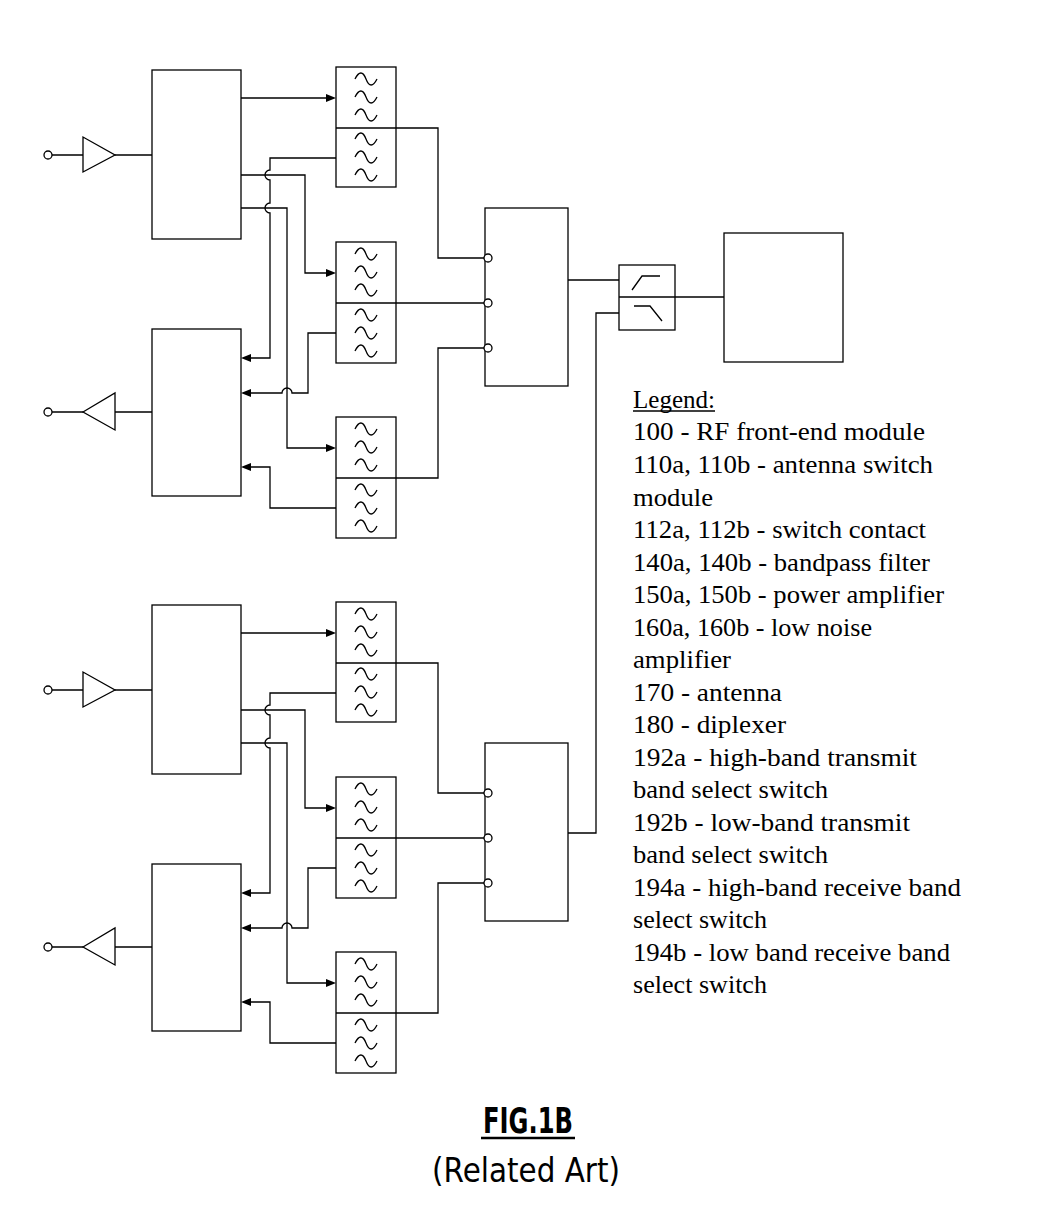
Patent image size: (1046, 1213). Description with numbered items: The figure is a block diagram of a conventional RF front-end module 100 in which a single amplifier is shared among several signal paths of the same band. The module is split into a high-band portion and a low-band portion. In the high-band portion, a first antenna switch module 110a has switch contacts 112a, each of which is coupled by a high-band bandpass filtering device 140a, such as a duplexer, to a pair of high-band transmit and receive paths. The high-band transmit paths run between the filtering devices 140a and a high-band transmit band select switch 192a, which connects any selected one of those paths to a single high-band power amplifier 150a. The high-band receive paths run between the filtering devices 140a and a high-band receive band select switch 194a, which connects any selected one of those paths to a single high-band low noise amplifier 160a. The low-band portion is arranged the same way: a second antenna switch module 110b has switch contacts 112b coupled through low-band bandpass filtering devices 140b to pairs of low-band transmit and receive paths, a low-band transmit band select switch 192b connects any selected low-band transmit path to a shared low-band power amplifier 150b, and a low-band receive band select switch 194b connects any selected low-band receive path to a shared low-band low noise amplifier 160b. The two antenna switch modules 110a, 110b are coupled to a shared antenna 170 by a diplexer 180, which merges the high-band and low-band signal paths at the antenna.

The RF front-end module 100 is at (648, 114).
The first antenna switch module 110a is at (555, 215).
The second antenna switch module 110b is at (548, 852).
The switch contact 112a is at (490, 254).
The switch contact 112b is at (520, 796).
The high-band bandpass filtering device 140a is at (398, 98).
The low-band bandpass filtering device 140b is at (407, 832).
The high-band power amplifier 150a is at (92, 137).
The low-band power amplifier 150b is at (98, 669).
The high-band low noise amplifier 160a is at (103, 425).
The low-band low noise amplifier 160b is at (97, 961).
The shared antenna 170 is at (783, 233).
The diplexer 180 is at (643, 265).
The high-band transmit band select switch 192a is at (186, 48).
The low-band transmit band select switch 192b is at (196, 674).
The high-band receive band select switch 194a is at (182, 329).
The low-band receive band select switch 194b is at (196, 926).